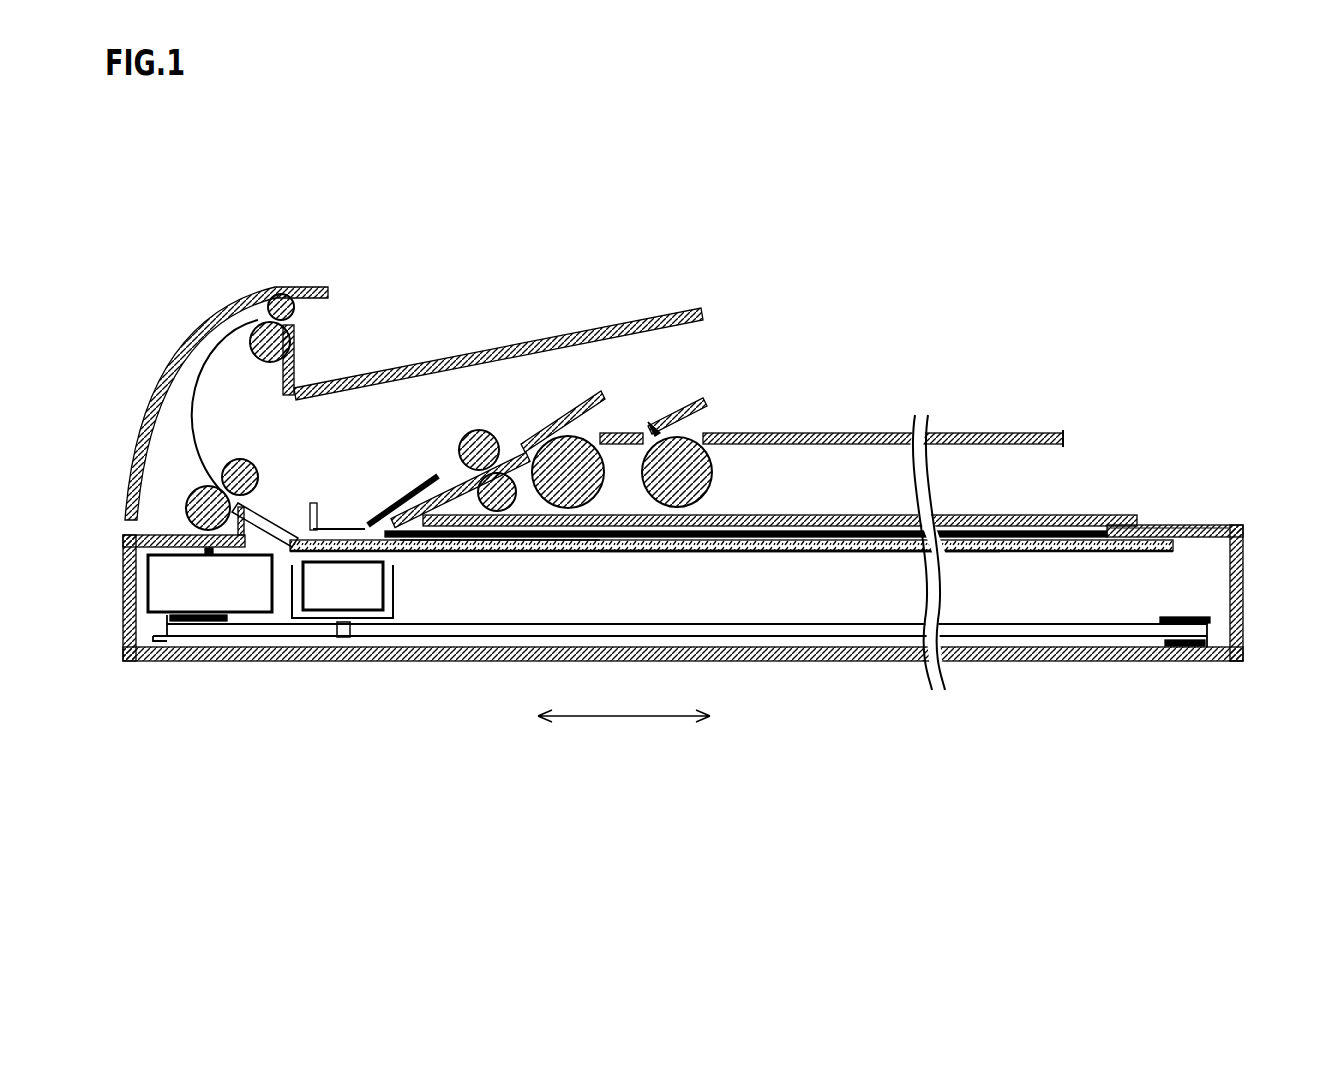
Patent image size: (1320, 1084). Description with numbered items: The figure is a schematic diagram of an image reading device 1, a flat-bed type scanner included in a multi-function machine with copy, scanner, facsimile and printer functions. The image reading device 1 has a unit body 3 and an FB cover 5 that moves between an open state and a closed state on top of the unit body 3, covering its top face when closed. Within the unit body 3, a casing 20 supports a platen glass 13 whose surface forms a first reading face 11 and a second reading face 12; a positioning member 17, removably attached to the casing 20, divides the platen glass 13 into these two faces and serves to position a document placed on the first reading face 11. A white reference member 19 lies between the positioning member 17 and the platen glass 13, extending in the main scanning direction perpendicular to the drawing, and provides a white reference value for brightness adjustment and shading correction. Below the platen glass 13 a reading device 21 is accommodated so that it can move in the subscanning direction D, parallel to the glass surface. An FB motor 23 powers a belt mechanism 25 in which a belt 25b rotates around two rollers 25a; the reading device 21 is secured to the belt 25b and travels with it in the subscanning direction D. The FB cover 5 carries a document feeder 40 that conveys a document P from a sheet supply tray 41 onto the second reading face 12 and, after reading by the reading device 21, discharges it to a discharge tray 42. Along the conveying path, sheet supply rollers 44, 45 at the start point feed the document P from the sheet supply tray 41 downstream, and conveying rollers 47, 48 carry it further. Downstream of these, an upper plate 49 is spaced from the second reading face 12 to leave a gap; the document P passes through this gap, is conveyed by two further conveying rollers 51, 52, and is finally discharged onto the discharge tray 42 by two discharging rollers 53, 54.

The image reading device 1 is at (1075, 258).
The unit body 3 is at (1260, 590).
The FB cover 5 is at (1096, 507).
The first reading face 11 is at (648, 552).
The second reading face 12 is at (385, 551).
The platen glass 13 is at (1028, 552).
The positioning member 17 is at (503, 548).
The white reference member 19 is at (460, 550).
The casing 20 is at (1193, 524).
The reading device 21 is at (352, 585).
The FB motor 23 is at (237, 585).
The belt mechanism 25 is at (693, 729).
The rollers 25a is at (173, 632).
The belt 25b is at (953, 696).
The document feeder 40 is at (490, 385).
The sheet supply tray 41 is at (853, 433).
The discharge tray 42 is at (556, 333).
The sheet supply roller 44 is at (713, 470).
The sheet supply roller 45 is at (598, 432).
The conveying roller 47 is at (478, 478).
The conveying roller 48 is at (463, 432).
The upper plate 49 is at (343, 527).
The conveying roller 51 is at (197, 490).
The conveying roller 52 is at (258, 465).
The discharging roller 53 is at (292, 330).
The discharging roller 54 is at (297, 313).
The document P is at (193, 432).
The subscanning direction D is at (624, 736).